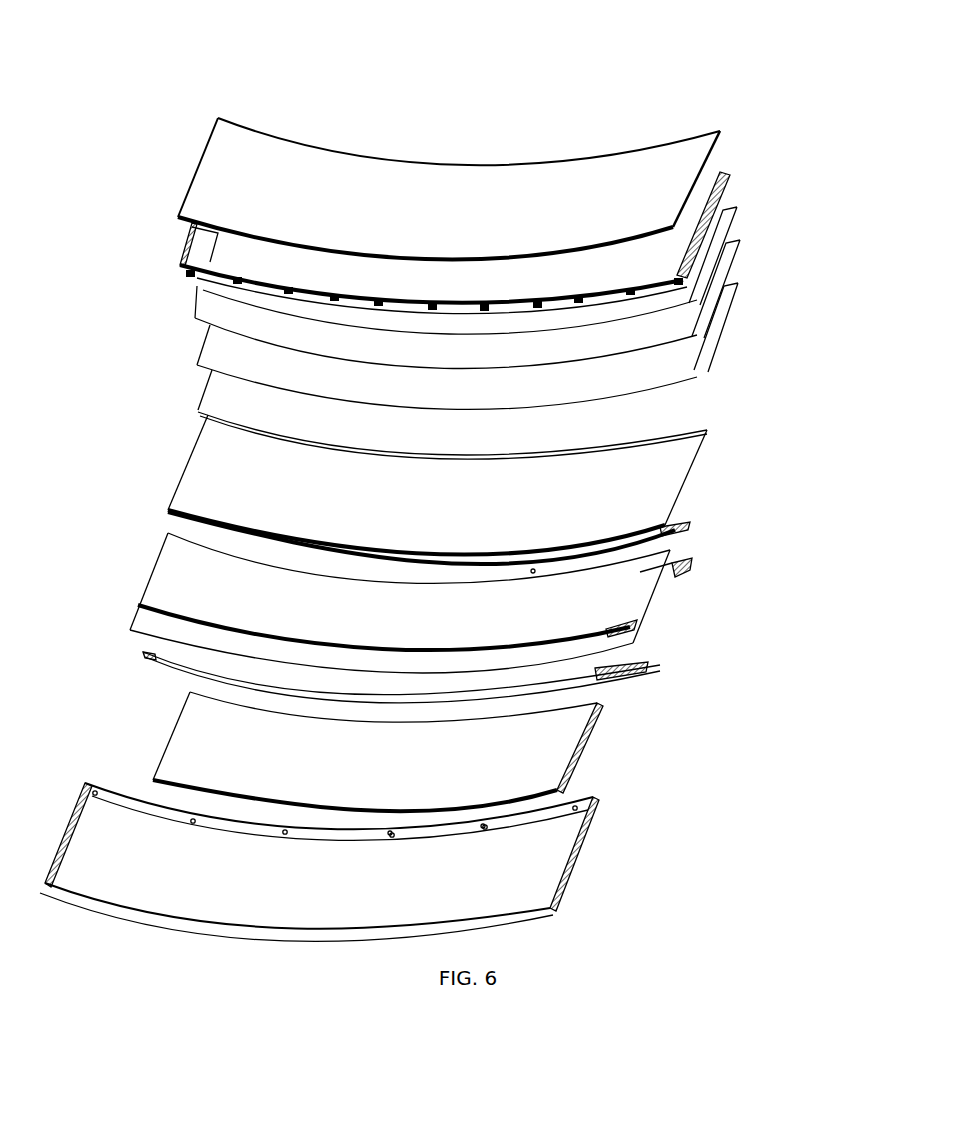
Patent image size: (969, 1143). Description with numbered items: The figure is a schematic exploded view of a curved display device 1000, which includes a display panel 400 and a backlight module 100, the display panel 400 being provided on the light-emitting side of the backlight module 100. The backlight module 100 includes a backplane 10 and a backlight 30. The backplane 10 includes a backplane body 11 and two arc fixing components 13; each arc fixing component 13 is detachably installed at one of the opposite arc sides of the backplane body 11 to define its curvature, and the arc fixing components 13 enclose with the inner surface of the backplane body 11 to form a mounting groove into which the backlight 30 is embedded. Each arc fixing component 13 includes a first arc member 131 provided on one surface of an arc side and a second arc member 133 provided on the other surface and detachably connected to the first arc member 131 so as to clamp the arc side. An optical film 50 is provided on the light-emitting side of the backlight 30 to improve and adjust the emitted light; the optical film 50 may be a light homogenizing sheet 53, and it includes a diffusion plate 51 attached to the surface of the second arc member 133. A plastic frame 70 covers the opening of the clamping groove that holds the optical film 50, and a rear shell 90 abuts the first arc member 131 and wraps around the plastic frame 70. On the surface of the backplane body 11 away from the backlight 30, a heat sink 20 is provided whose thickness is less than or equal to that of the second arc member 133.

The curved display device 1000 is at (497, 44).
The display panel 400 is at (657, 208).
The backlight module 100 is at (458, 557).
The plastic frame 70 is at (688, 276).
The optical film 50 is at (506, 314).
The light homogenizing sheet 53 is at (647, 332).
The diffusion plate 51 is at (653, 416).
The backlight 30 is at (620, 497).
The second arc member 133 is at (682, 534).
The first arc member 131 is at (690, 567).
The backplane 10 is at (466, 611).
The backplane body 11 is at (610, 600).
The arc fixing component 13 is at (738, 656).
The heat sink 20 is at (535, 770).
The rear shell 90 is at (410, 842).